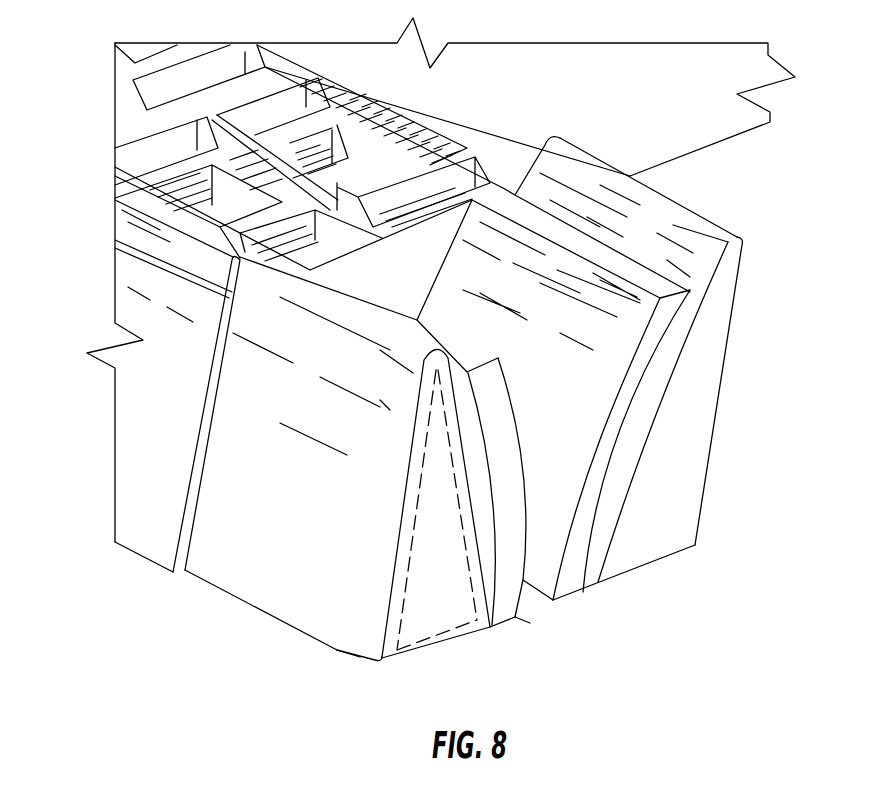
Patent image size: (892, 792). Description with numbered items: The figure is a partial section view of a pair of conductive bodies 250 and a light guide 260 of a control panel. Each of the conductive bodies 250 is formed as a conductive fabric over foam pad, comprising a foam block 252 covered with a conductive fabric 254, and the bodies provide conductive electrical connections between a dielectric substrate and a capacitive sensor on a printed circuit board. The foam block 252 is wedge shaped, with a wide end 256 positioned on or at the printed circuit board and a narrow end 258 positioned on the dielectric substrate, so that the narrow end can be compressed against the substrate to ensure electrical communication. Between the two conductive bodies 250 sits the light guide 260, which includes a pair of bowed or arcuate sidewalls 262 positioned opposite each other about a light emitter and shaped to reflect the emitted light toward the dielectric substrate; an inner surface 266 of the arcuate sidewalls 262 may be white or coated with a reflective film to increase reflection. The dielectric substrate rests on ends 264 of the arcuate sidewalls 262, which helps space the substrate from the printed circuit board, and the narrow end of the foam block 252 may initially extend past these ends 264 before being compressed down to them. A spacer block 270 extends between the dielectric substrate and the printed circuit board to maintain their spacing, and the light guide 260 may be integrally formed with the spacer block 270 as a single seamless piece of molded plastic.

The conductive bodies 250 is at (637, 554).
The foam block 252 is at (432, 640).
The conductive fabric 254 is at (345, 648).
The wide end 256 is at (705, 541).
The narrow end 258 is at (745, 240).
The light guide 260 is at (617, 450).
The arcuate sidewalls 262 is at (572, 582).
The ends of arcuate sidewalls 264 is at (368, 298).
The inner surface 266 is at (620, 395).
The spacer block 270 is at (128, 312).